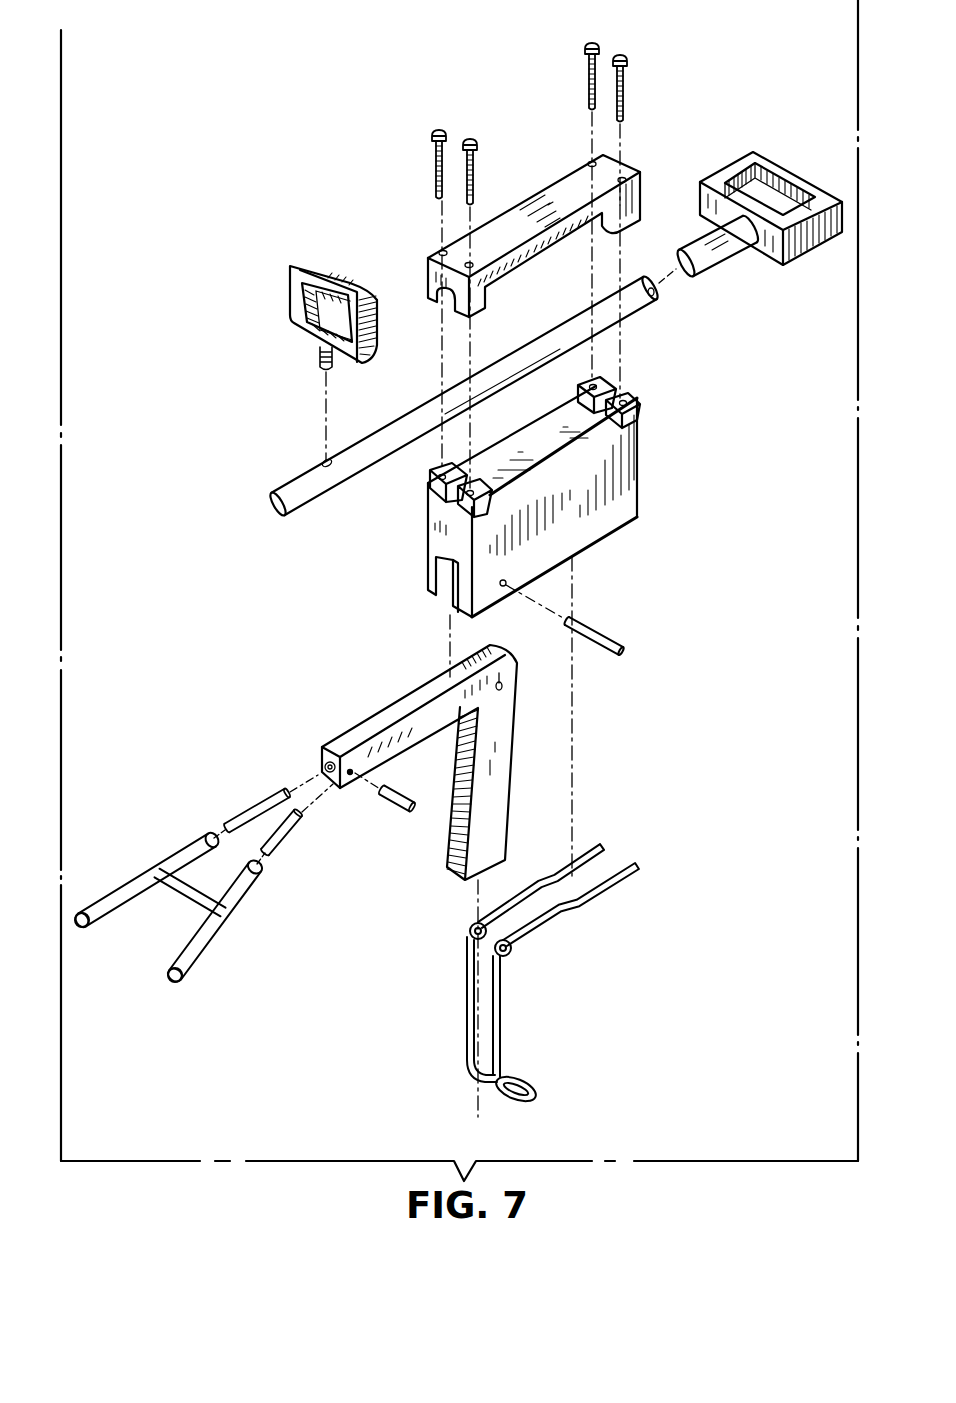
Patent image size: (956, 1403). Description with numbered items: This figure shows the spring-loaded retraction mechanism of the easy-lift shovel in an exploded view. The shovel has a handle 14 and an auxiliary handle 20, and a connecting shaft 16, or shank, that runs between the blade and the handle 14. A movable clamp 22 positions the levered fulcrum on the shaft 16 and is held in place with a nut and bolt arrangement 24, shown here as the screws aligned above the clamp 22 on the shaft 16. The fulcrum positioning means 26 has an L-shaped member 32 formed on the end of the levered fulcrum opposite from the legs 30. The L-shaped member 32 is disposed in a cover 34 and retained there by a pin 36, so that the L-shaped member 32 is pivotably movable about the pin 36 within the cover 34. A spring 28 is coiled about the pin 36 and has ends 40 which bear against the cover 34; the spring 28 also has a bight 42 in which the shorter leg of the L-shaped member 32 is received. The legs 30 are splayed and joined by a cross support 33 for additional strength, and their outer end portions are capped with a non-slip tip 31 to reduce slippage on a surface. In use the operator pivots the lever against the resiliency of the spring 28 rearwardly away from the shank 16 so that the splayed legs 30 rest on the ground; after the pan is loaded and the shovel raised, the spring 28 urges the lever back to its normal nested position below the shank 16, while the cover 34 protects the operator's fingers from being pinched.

The handle 14 is at (732, 160).
The connecting shaft 16 is at (637, 320).
The auxiliary handle 20 is at (291, 265).
The movable clamp 22 is at (527, 193).
The nut and bolt arrangement 24 is at (437, 130).
The fulcrum positioning means 26 is at (351, 573).
The spring 28 is at (500, 1003).
The legs 30 is at (122, 887).
The non-slip tip 31 is at (90, 926).
The L-shaped member 32 is at (353, 731).
The cross support 33 is at (188, 887).
The cover 34 is at (643, 446).
The pin 36 is at (605, 635).
The spring ends 40 is at (628, 878).
The bight 42 is at (517, 1078).